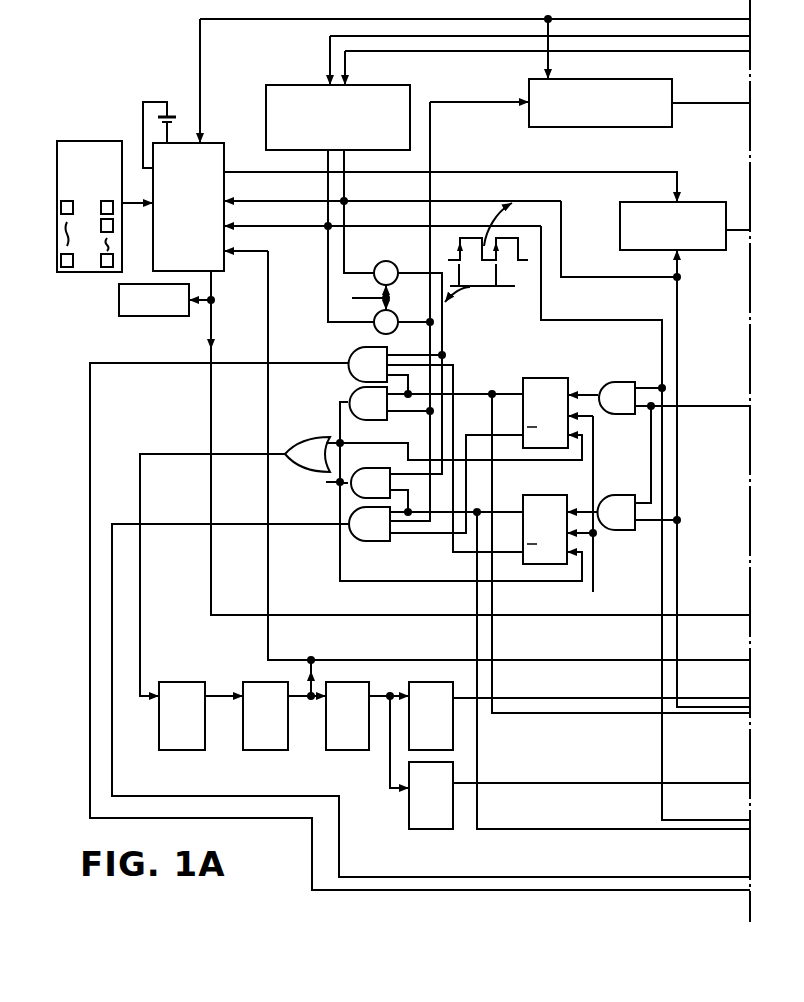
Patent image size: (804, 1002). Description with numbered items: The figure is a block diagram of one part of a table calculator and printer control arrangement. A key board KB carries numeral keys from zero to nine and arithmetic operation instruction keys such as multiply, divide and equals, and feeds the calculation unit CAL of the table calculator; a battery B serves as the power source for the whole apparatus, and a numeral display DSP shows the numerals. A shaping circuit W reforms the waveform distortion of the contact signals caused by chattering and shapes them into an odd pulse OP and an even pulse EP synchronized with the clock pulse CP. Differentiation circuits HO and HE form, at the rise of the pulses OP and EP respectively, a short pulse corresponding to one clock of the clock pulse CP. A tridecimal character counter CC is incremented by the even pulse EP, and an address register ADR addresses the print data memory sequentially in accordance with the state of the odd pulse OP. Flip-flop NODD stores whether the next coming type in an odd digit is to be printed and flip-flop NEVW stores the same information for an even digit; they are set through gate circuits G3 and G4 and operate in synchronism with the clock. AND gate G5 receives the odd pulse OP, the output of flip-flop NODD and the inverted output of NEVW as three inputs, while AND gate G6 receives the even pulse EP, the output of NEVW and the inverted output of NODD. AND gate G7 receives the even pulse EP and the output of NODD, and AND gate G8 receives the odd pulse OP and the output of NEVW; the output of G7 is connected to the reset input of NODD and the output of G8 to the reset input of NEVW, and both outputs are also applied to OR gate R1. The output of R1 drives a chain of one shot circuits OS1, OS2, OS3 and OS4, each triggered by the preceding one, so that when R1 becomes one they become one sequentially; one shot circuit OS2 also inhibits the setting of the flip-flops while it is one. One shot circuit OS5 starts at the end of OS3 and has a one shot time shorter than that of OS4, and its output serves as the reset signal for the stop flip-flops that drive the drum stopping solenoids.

The key board KB is at (105, 206).
The calculation unit CAL is at (451, 379).
The battery B is at (178, 121).
The numeral display DSP is at (166, 300).
The shaping circuit W is at (292, 85).
The tridecimal character counter CC is at (528, 82).
The address register ADR is at (620, 216).
The odd pulse OP is at (450, 187).
The even pulse EP is at (382, 217).
The differentiation circuit HO is at (382, 262).
The differentiation circuit HE is at (391, 315).
The clock pulse CP is at (464, 449).
The gate circuit G3 is at (659, 442).
The gate circuit G4 is at (622, 512).
The AND gate G5 is at (420, 618).
The AND gate G6 is at (431, 692).
The AND gate G7 is at (461, 484).
The AND gate G8 is at (374, 490).
The OR gate R1 is at (240, 566).
The flip-flop NODD is at (558, 403).
The flip-flop NEVW is at (559, 520).
The one shot circuit OS1 is at (201, 716).
The one shot circuit OS2 is at (284, 716).
The one shot circuit OS3 is at (367, 735).
The one shot circuit OS4 is at (579, 716).
The one shot circuit OS5 is at (579, 795).